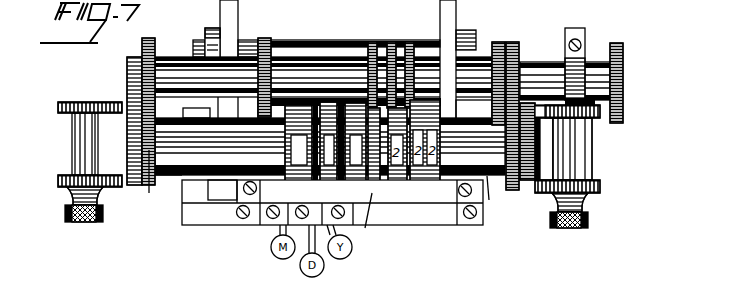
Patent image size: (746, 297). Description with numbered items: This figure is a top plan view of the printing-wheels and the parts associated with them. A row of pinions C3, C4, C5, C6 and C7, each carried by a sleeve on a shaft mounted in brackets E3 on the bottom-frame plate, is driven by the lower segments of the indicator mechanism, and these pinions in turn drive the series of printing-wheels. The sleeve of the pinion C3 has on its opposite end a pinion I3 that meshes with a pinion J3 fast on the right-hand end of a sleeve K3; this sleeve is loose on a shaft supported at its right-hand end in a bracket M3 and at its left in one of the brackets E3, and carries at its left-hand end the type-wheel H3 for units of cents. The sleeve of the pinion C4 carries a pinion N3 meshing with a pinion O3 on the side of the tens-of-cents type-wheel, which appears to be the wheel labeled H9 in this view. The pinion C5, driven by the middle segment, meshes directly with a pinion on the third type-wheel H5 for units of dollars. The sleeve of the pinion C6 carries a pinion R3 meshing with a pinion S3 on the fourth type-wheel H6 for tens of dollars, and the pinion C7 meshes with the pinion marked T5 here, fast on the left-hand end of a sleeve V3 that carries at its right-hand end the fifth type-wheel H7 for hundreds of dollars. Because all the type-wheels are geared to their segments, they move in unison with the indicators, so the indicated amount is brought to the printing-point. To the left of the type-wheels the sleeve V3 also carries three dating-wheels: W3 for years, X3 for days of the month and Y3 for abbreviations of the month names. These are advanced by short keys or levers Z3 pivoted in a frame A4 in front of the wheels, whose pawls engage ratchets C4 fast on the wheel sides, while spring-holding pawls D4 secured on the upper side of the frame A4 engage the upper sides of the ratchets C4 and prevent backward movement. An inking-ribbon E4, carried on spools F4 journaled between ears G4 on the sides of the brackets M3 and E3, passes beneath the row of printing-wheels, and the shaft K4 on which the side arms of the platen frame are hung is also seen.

The pinion C7 is at (152, 38).
The bracket E3 is at (127, 67).
The ear G4 is at (77, 102).
The spool F4 is at (92, 162).
The inking-ribbon E4 is at (103, 203).
The pin T5 is at (149, 193).
The sleeve V3 is at (193, 153).
The frame A4 is at (220, 215).
The spring-holding pawl D4 is at (222, 190).
The pinion C4 is at (500, 42).
The pinion C6 is at (267, 40).
The shaft K4 is at (322, 33).
The pinion R3 is at (372, 41).
The pinion C5 is at (392, 41).
The pinion N3 is at (410, 43).
The dating-wheel Y3 is at (302, 104).
The dating-wheel X3 is at (328, 101).
The dating-wheel W3 is at (355, 102).
The pinion I3 is at (519, 60).
The pinion J3 is at (512, 182).
The pinion C3 is at (620, 43).
The bracket M3 is at (527, 157).
The sleeve K3 is at (489, 200).
The key or lever Z3 is at (275, 256).
The type-wheel H7 is at (365, 228).
The pinion S3 is at (362, 195).
The pinion O3 is at (400, 195).
The type-wheel H6 is at (387, 195).
The type-wheel H5 is at (405, 195).
The wire H9 is at (420, 195).
The type-wheel H3 is at (432, 195).